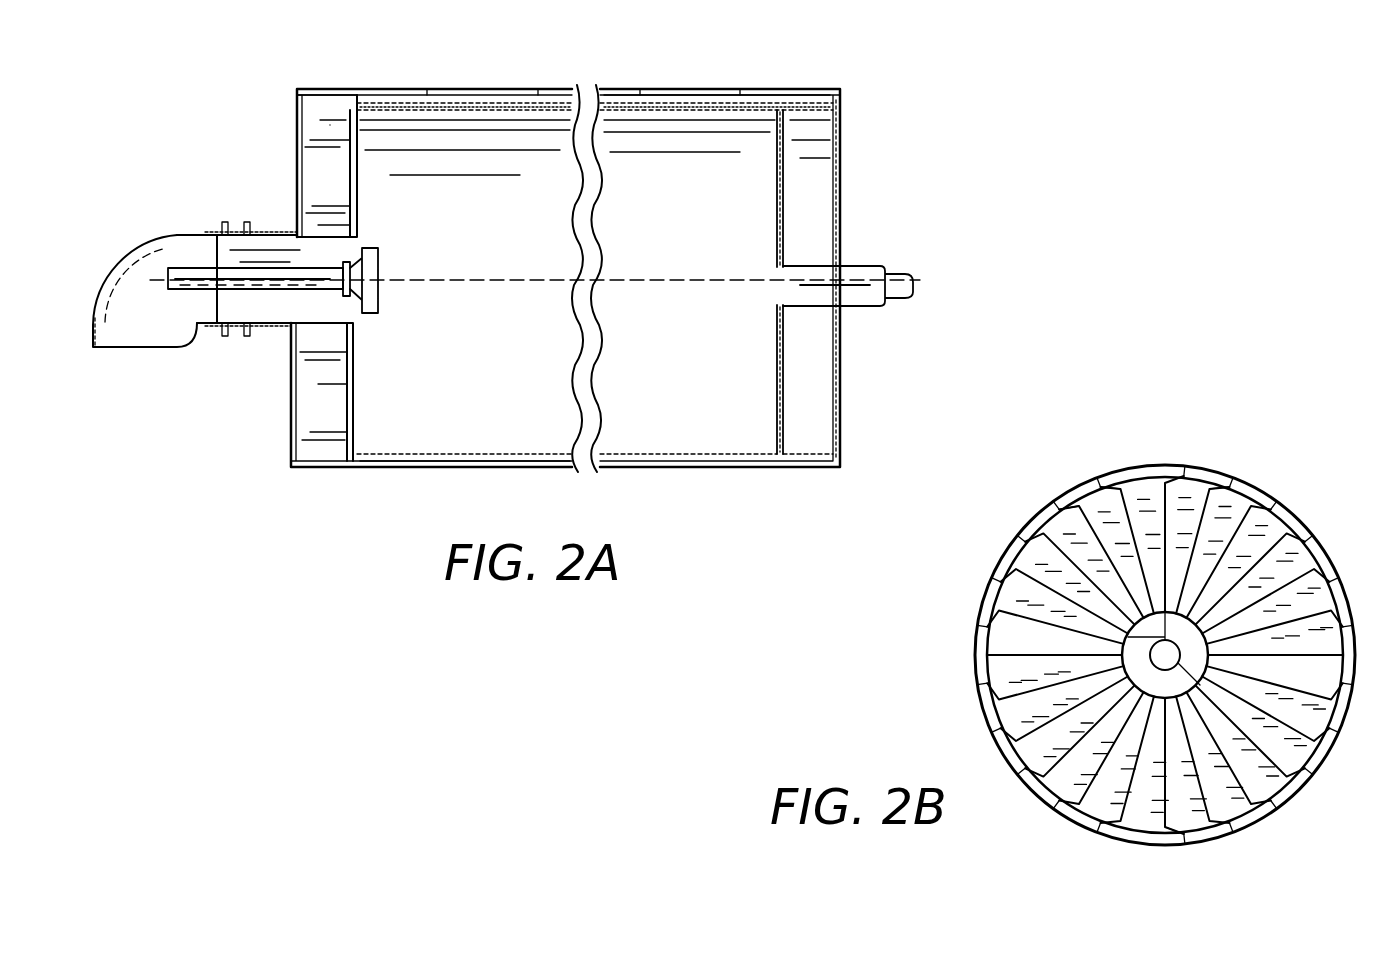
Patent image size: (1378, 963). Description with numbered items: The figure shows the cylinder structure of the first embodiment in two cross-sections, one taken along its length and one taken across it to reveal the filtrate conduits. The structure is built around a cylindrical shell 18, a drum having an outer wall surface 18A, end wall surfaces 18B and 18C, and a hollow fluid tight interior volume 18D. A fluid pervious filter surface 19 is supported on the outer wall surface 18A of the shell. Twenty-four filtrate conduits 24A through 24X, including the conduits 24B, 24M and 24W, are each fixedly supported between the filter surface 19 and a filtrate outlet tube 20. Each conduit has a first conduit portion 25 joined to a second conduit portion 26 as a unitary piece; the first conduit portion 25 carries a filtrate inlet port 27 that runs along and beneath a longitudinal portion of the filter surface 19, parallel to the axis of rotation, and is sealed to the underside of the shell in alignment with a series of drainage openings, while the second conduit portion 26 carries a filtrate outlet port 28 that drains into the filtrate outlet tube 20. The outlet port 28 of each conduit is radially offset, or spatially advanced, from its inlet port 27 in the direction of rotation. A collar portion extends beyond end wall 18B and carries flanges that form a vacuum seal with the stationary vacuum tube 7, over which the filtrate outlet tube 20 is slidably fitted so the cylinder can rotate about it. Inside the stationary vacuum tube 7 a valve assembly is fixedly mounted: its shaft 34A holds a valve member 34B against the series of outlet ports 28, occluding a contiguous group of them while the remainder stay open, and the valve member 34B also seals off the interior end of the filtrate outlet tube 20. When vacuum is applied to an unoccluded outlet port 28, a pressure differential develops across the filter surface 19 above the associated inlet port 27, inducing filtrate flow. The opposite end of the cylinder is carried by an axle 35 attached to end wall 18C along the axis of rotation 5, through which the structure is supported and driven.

In FIG. 2A, the cylindrical shell 18 is at (300, 60).
In FIG. 2A, the filtrate inlet port 27 is at (340, 92).
In FIG. 2B, the filtrate inlet port 27 is at (1168, 468).
In FIG. 2A, the first conduit portion 25 is at (470, 105).
In FIG. 2A, the outer wall surface 18A is at (660, 95).
In FIG. 2A, the end wall surface 18B is at (357, 392).
In FIG. 2A, the end wall surface 18C is at (785, 175).
In FIG. 2A, the hollow fluid tight interior volume 18D is at (435, 465).
In FIG. 2A, the filter surface 19 is at (510, 470).
In FIG. 2A, the filtrate conduit 24A is at (315, 135).
In FIG. 2B, the filtrate conduit 24A is at (1142, 495).
In FIG. 2A, the filtrate conduit 24M is at (310, 408).
In FIG. 2B, the filtrate conduit 24M is at (1183, 820).
In FIG. 2B, the filtrate conduit 24W is at (1062, 500).
In FIG. 2B, the filtrate conduit 24X is at (1112, 500).
In FIG. 2B, the filtrate conduit 24B is at (1205, 490).
In FIG. 2A, the second conduit portion 26 is at (332, 192).
In FIG. 2A, the filtrate outlet tube 20 is at (270, 243).
In FIG. 2A, the stationary vacuum tube 7 is at (150, 340).
In FIG. 2A, the shaft 34A is at (200, 268).
In FIG. 2A, the valve member 34B is at (355, 285).
In FIG. 2A, the filtrate outlet port 28 is at (348, 238).
In FIG. 2B, the filtrate outlet port 28 is at (1128, 637).
In FIG. 2A, the axis 5 is at (655, 288).
In FIG. 2A, the axle 35 is at (875, 268).